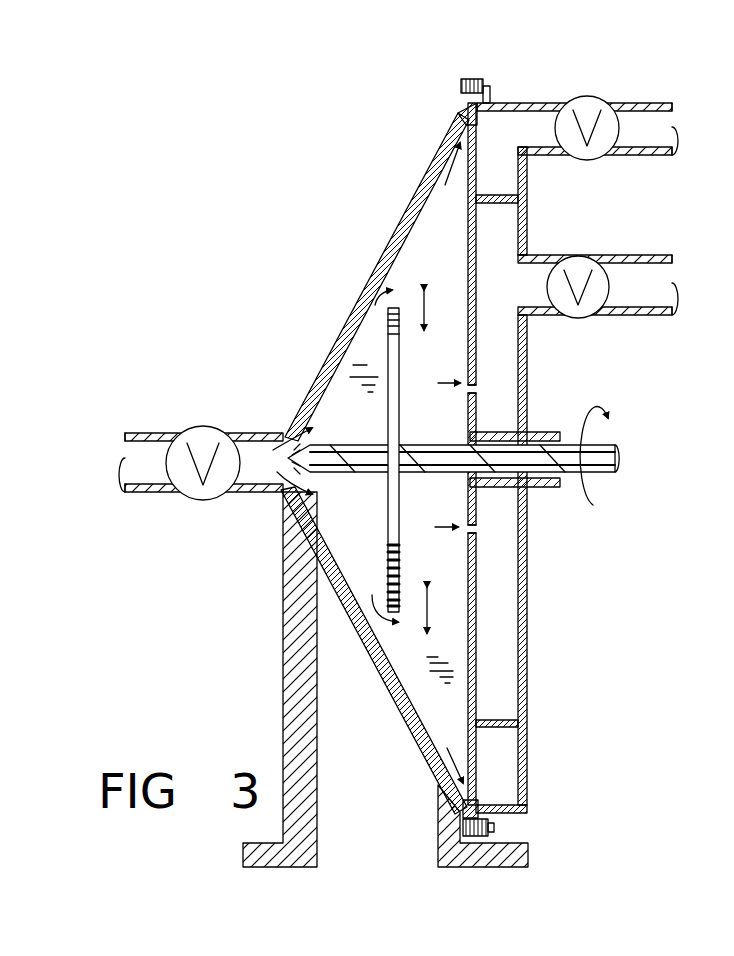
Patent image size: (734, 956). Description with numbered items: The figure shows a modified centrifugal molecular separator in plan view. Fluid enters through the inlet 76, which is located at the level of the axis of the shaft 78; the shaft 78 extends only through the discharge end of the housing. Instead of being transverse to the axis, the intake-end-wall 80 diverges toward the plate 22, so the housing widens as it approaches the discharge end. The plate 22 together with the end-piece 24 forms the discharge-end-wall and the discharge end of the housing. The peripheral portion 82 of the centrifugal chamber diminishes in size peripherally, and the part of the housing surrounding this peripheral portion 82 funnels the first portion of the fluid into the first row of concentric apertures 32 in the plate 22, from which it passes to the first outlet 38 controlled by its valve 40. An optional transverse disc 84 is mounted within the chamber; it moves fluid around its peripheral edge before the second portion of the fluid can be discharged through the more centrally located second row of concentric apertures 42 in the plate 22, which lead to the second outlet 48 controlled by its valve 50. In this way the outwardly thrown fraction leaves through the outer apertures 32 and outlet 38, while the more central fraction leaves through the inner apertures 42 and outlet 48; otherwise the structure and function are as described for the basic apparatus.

The plate 22 is at (476, 233).
The end-piece 24 is at (528, 590).
The first concentric row of apertures 32 is at (467, 120).
The first outlet 38 is at (653, 122).
The valve 40 is at (583, 107).
The second row of concentric apertures 42 is at (522, 260).
The second outlet 48 is at (657, 282).
The valve 50 is at (576, 262).
The inlet 76 is at (253, 447).
The shaft 78 is at (604, 458).
The intake-end-wall 80 is at (382, 268).
The peripheral portion of the centrifugal chamber 82 is at (440, 190).
The transverse disc 84 is at (393, 500).